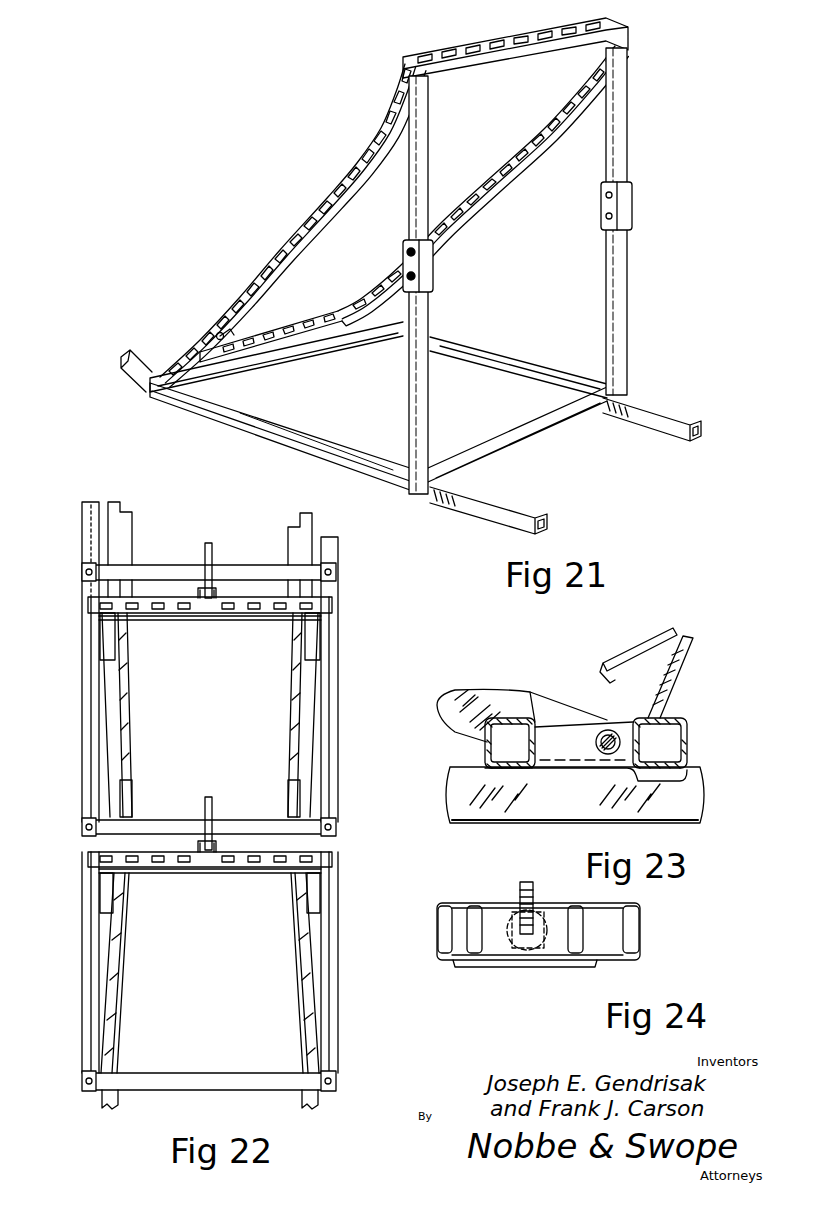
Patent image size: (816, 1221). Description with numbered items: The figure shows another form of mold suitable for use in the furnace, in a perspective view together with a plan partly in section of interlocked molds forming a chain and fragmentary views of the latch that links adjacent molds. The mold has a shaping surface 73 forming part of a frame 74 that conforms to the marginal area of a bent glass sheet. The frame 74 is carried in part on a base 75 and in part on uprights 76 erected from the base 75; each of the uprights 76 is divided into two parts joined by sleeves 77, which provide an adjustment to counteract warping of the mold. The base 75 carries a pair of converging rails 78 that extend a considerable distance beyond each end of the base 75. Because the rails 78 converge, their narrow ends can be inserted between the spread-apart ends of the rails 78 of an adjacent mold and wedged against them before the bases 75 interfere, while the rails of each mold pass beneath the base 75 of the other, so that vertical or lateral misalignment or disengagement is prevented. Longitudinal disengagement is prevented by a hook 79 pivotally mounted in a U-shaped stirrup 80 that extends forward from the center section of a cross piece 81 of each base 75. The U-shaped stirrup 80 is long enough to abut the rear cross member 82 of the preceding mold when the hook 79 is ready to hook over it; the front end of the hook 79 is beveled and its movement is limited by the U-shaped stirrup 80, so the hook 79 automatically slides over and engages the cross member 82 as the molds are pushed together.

In FIG. 21, the shaping surface 73 is at (303, 232).
In FIG. 22, the shaping surface 73 is at (90, 600).
In FIG. 23, the shaping surface 73 is at (628, 662).
In FIG. 21, the frame 74 is at (333, 218).
In FIG. 22, the frame 74 is at (273, 613).
In FIG. 23, the frame 74 is at (655, 700).
In FIG. 21, the base 75 is at (259, 428).
In FIG. 22, the base 75 is at (82, 537).
In FIG. 21, the uprights 76 is at (428, 327).
In FIG. 22, the uprights 76 is at (336, 573).
In FIG. 21, the sleeves 77 is at (427, 278).
In FIG. 21, the converging rails 78 is at (648, 417).
In FIG. 22, the converging rails 78 is at (122, 510).
In FIG. 23, the converging rails 78 is at (690, 797).
In FIG. 21, the hook 79 is at (219, 332).
In FIG. 22, the hook 79 is at (209, 548).
In FIG. 23, the hook 79 is at (502, 695).
In FIG. 24, the hook 79 is at (521, 884).
In FIG. 22, the U-shaped stirrup 80 is at (222, 578).
In FIG. 23, the U-shaped stirrup 80 is at (583, 735).
In FIG. 24, the U-shaped stirrup 80 is at (552, 904).
In FIG. 21, the cross piece 81 is at (301, 353).
In FIG. 22, the cross piece 81 is at (215, 620).
In FIG. 23, the cross piece 81 is at (688, 735).
In FIG. 24, the cross piece 81 is at (638, 928).
In FIG. 21, the rear cross member 82 is at (548, 424).
In FIG. 22, the rear cross member 82 is at (157, 570).
In FIG. 23, the rear cross member 82 is at (482, 752).
In FIG. 24, the rear cross member 82 is at (497, 945).